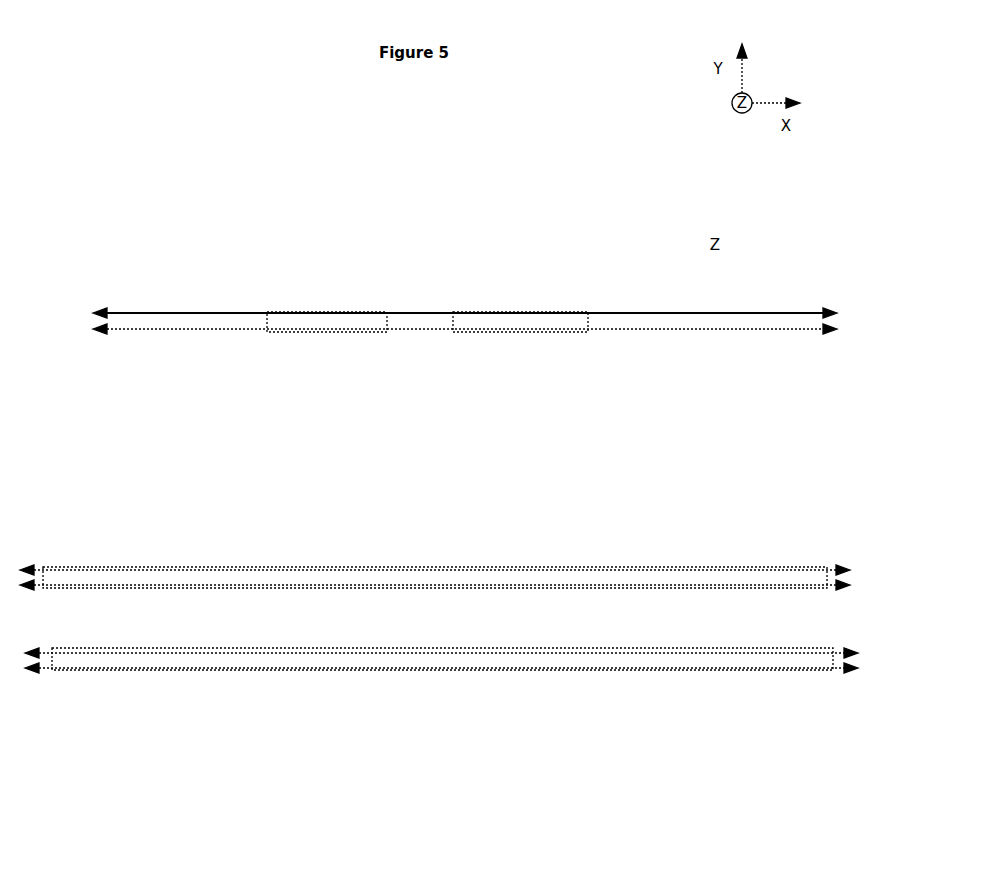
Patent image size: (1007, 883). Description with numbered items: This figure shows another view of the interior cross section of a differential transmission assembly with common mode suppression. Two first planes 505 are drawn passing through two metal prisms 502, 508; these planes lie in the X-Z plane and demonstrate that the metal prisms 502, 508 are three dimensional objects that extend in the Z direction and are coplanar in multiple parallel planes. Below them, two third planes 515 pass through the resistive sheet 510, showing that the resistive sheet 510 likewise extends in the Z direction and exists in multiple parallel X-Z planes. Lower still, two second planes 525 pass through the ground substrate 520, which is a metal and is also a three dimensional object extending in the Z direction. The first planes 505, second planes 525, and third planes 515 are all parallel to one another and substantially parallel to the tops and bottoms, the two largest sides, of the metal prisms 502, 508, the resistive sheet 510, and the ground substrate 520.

The metal prism 502 is at (327, 277).
The metal prism 508 is at (520, 280).
The first planes 505 is at (797, 344).
The resistive sheet 510 is at (435, 547).
The third planes 515 is at (856, 556).
The ground substrate 520 is at (442, 688).
The second planes 525 is at (849, 703).